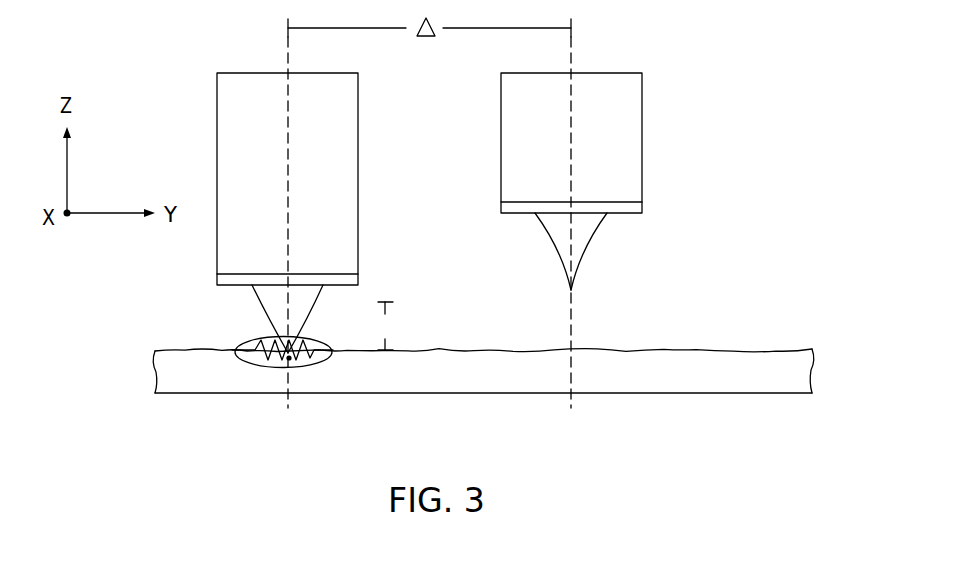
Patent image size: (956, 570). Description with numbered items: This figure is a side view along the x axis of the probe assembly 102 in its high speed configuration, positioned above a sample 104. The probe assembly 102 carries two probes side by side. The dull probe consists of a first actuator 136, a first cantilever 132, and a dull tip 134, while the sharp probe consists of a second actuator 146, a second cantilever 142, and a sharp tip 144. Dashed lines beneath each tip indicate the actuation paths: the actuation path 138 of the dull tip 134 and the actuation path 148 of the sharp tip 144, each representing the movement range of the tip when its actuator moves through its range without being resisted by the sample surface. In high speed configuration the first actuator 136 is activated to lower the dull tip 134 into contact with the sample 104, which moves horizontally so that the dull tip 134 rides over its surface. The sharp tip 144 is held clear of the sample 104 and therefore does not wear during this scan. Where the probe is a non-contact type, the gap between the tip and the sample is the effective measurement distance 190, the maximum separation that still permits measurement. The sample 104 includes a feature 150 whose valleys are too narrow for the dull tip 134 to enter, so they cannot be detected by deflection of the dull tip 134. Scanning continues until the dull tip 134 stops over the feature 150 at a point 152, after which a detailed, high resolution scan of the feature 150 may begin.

The probe assembly 102 is at (683, 110).
The sample 104 is at (477, 385).
The first cantilever 132 is at (222, 278).
The dull tip 134 is at (283, 307).
The first actuator 136 is at (305, 195).
The actuation path 138 is at (288, 128).
The second cantilever 142 is at (638, 207).
The sharp tip 144 is at (577, 245).
The second actuator 146 is at (587, 148).
The actuation path 148 is at (571, 188).
The feature 150 is at (258, 368).
The point 152 is at (290, 342).
The effective measurement distance 190 is at (388, 326).